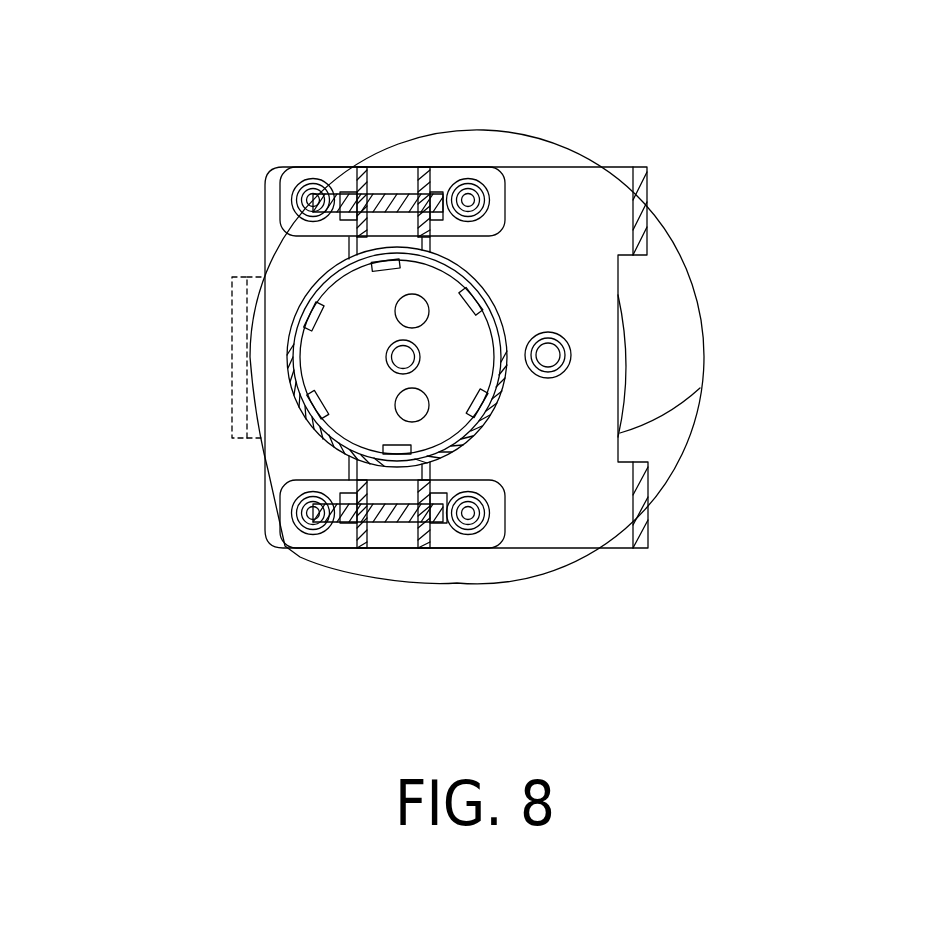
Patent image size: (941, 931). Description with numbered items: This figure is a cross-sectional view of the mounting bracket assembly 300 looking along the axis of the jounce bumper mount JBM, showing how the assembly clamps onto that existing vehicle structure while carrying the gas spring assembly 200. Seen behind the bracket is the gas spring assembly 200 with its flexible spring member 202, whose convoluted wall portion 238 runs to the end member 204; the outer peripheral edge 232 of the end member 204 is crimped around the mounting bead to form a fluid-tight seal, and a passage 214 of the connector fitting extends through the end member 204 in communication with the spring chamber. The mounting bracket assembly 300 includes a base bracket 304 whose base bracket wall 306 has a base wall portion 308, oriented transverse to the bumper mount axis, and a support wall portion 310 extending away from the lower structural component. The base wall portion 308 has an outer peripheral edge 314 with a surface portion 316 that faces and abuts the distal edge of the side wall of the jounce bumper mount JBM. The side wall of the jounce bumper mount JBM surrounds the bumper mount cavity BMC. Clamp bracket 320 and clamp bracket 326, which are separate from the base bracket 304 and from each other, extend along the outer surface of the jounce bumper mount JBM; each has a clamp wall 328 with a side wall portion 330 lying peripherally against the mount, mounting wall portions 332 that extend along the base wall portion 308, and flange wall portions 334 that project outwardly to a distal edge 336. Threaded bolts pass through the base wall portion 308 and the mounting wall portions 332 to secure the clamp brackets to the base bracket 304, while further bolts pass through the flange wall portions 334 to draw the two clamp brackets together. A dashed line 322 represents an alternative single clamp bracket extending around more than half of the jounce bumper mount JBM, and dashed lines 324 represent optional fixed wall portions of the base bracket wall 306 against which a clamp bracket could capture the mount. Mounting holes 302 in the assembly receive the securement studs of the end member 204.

The gas spring assembly 200 is at (775, 416).
The flexible spring member 202 is at (705, 420).
The end member 204 is at (620, 343).
The passage 214 is at (566, 328).
The outer peripheral edge 232 is at (638, 365).
The convoluted wall portion 238 is at (668, 445).
The mounting bracket assembly 300 is at (200, 140).
The mounting holes 302 is at (282, 298).
The base bracket 304 is at (603, 201).
The base bracket wall 306 is at (660, 180).
The base wall portion 308 is at (613, 562).
The support wall portion 310 is at (655, 226).
The outer peripheral edge 314 is at (550, 167).
The surface portion 316 is at (617, 167).
The clamp bracket 320 is at (508, 440).
The single clamp bracket 322 is at (380, 215).
The fixed wall portions 324 is at (222, 401).
The clamp bracket 326 is at (355, 458).
The clamp wall 328 is at (278, 337).
The side wall portion 330 is at (300, 400).
The mounting wall portions 332 is at (292, 192).
The flange wall portions 334 is at (318, 168).
The distal edge 336 is at (358, 167).
The bumper mount cavity BMC is at (470, 340).
The jounce bumper mount JBM is at (386, 487).